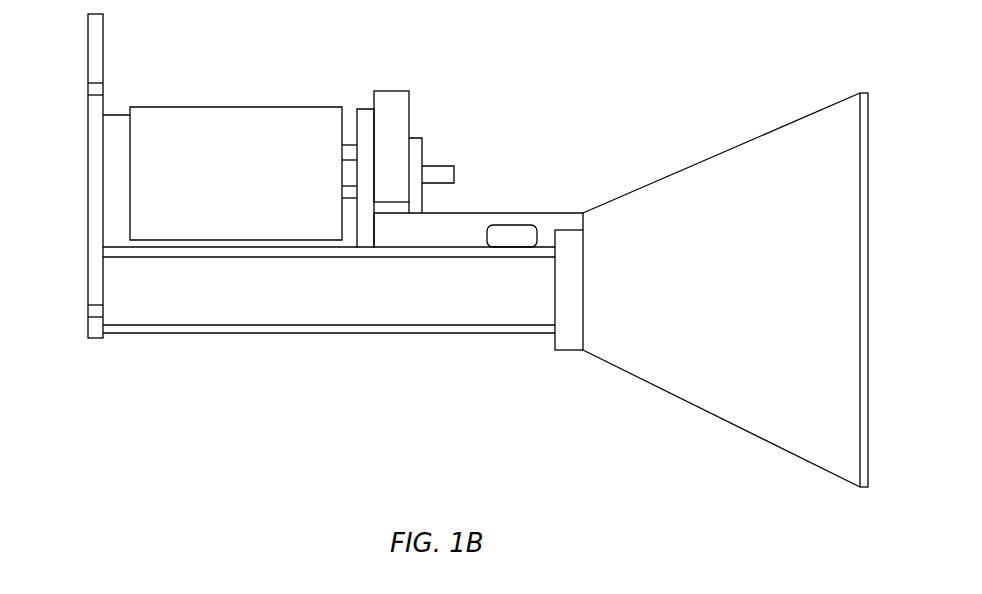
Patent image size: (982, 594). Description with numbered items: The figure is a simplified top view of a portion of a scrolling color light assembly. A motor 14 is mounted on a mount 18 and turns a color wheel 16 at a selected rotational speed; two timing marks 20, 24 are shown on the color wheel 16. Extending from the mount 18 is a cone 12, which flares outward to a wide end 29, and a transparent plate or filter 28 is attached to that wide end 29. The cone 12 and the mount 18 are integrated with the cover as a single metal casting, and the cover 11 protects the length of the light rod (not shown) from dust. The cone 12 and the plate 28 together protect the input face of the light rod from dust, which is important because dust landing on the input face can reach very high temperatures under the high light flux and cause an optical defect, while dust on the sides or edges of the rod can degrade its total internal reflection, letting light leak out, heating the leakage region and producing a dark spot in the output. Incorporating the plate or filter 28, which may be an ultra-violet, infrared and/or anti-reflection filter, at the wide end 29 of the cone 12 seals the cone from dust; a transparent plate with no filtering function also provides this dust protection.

The cover 11 is at (232, 334).
The cone 12 is at (724, 155).
The motor 14 is at (232, 107).
The color wheel 16 is at (103, 43).
The mount 18 is at (485, 212).
The timing mark 20 is at (103, 90).
The timing mark 24 is at (88, 310).
The transparent plate or filter 28 is at (863, 93).
The wide end 29 is at (815, 466).